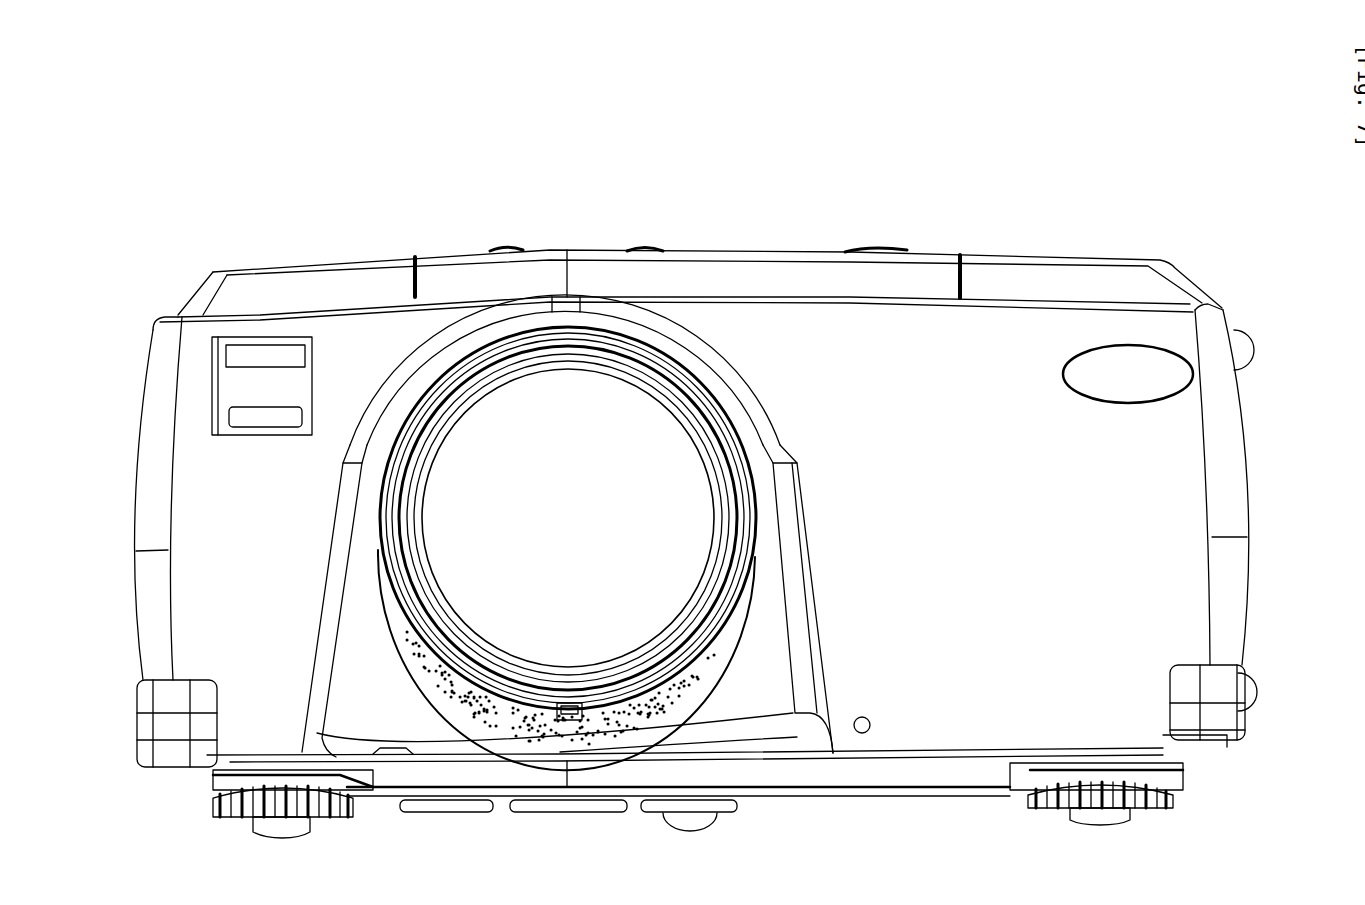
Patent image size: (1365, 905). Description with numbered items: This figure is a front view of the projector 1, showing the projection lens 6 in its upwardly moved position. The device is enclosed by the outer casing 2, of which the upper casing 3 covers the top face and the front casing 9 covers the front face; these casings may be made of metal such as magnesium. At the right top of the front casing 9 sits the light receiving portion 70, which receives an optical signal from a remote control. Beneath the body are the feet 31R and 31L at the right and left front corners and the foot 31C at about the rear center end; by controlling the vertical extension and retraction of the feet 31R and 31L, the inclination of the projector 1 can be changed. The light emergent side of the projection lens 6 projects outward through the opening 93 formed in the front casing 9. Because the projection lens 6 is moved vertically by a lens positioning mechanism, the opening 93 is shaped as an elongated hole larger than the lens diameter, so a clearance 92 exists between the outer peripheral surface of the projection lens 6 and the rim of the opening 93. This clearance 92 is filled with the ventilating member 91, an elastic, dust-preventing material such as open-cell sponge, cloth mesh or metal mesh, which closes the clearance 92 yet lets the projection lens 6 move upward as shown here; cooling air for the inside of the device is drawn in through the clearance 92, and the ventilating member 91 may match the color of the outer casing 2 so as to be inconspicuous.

The projector 1 is at (120, 247).
The outer casing 2 is at (122, 521).
The upper casing 3 is at (703, 250).
The projection lens 6 is at (503, 366).
The front casing 9 is at (1180, 493).
The light receiving portion 70 is at (1112, 368).
The ventilating member 91 is at (480, 715).
The clearance 92 is at (534, 732).
The opening 93 is at (704, 686).
The foot 31R is at (233, 818).
The foot 31L is at (1170, 807).
The foot 31C is at (699, 831).